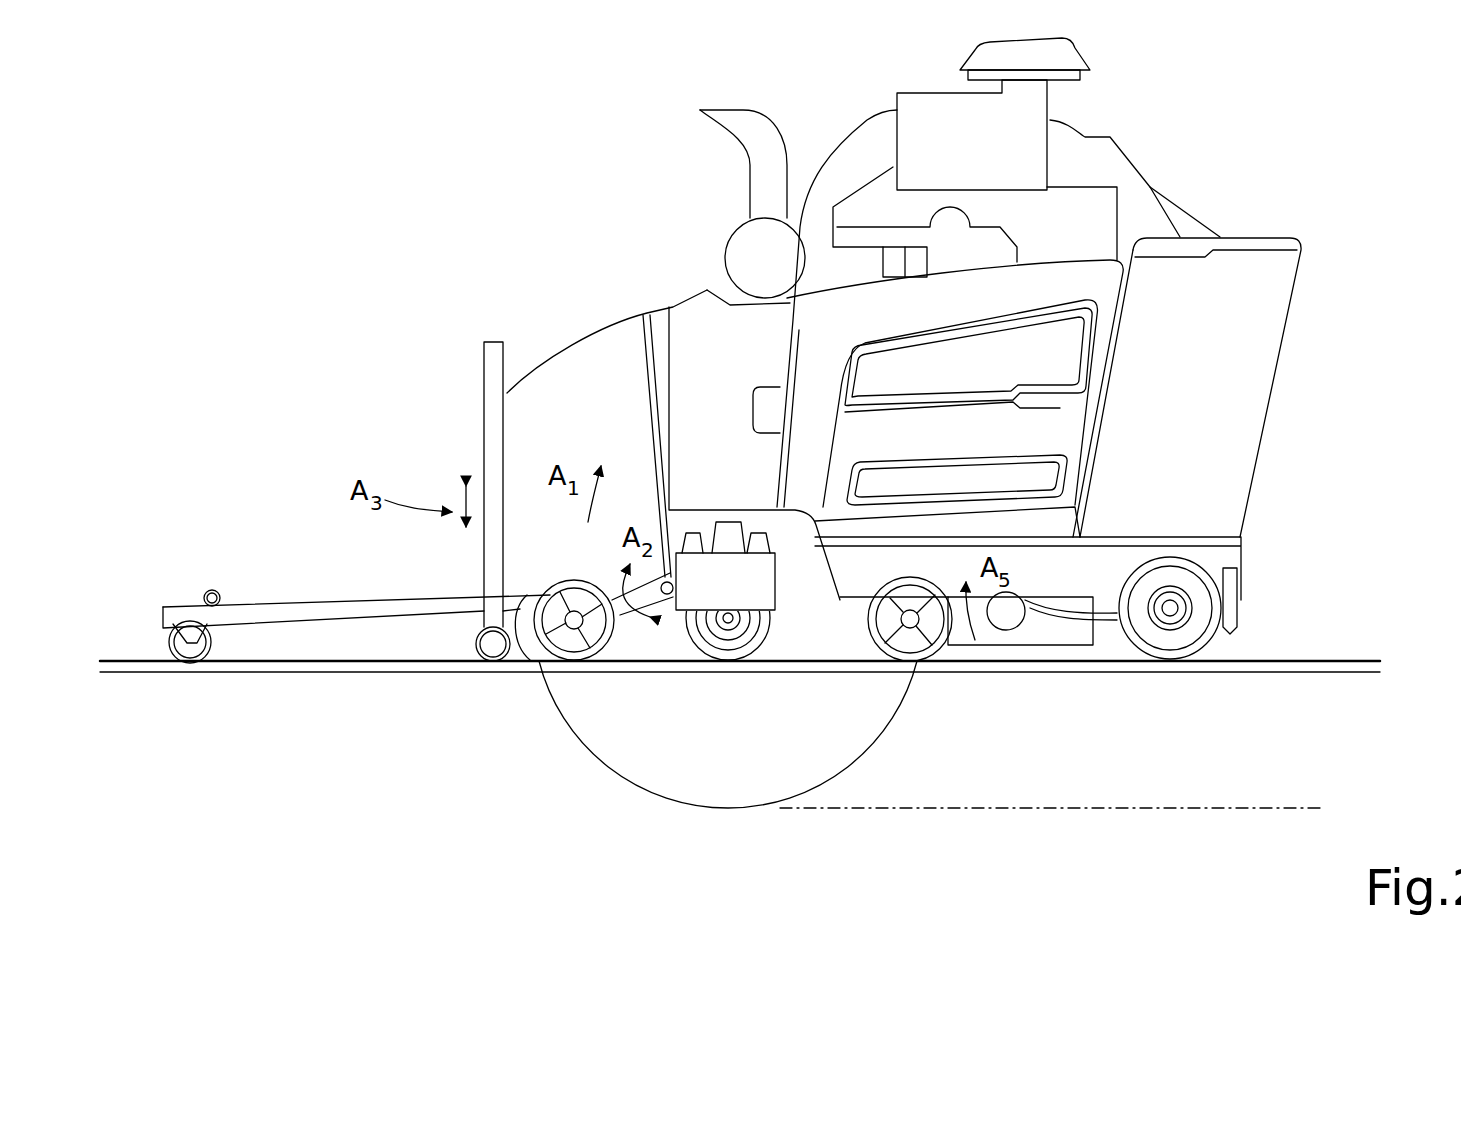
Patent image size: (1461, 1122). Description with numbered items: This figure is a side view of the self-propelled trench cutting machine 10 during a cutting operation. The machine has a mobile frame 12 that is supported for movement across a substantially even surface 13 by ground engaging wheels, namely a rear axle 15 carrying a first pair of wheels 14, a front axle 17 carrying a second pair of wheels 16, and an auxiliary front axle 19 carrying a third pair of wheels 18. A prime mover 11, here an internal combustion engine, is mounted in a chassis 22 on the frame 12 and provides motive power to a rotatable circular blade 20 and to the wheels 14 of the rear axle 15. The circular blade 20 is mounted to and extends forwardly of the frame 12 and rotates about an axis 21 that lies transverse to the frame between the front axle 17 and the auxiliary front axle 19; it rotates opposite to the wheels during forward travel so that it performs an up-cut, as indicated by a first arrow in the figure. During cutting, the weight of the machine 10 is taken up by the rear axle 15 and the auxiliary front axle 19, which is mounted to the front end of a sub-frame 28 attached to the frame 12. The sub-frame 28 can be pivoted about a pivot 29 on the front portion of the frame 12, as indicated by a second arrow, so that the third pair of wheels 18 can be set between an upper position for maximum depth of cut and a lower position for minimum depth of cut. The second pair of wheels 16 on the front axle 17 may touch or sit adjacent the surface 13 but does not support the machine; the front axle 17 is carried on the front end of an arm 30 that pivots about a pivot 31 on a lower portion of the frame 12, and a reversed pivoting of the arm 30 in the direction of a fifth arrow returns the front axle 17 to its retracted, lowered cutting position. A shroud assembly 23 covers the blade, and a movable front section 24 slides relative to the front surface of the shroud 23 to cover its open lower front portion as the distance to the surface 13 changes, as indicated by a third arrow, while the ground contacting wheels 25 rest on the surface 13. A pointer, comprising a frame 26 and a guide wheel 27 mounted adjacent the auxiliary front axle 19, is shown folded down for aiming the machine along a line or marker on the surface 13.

The trench cutting machine 10 is at (493, 152).
The prime mover 11 is at (1138, 83).
The mobile frame 12 is at (912, 648).
The surface 13 is at (1322, 660).
The first pair of wheels 14 is at (1217, 637).
The rear axle 15 is at (1170, 612).
The second pair of wheels 16 is at (978, 642).
The front axle 17 is at (937, 634).
The third pair of wheels 18 is at (582, 660).
The auxiliary front axle 19 is at (573, 622).
The circular blade assembly 20 is at (843, 753).
The axis 21 is at (730, 615).
The chassis 22 is at (1233, 183).
The shroud assembly 23 is at (582, 362).
The movable front section 24 is at (492, 432).
The ground contacting wheels 25 is at (490, 650).
The frame 26 is at (365, 608).
The guide wheel 27 is at (185, 662).
The sub-frame 28 is at (630, 598).
The pivot 29 is at (667, 594).
The arm 30 is at (1010, 618).
The pivot 31 is at (1060, 620).